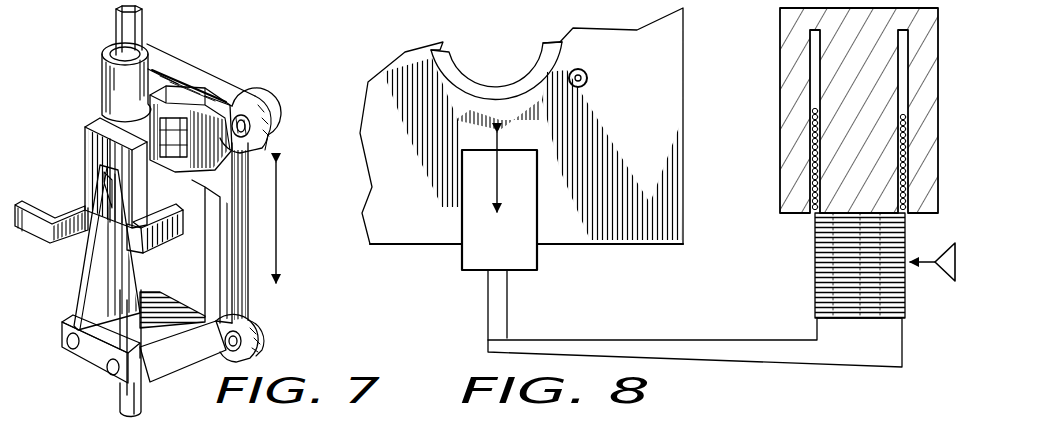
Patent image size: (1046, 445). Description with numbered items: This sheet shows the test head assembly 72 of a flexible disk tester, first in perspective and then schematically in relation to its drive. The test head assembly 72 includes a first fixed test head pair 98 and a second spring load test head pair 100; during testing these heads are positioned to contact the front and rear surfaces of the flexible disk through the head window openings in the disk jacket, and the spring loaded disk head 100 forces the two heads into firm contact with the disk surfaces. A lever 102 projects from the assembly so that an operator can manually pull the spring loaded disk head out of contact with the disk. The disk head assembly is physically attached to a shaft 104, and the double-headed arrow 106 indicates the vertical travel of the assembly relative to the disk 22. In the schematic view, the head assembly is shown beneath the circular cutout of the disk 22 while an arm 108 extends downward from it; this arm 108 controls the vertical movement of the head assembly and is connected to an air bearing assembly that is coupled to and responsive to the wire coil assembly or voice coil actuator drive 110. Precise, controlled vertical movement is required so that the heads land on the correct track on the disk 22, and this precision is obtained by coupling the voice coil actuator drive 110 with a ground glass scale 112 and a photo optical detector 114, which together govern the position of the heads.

In FIG. 8, the disk 22 is at (470, 108).
In FIG. 7, the test head assembly 72 is at (222, 58).
In FIG. 8, the test head assembly 72 is at (462, 223).
In FIG. 7, the first fixed test head pair 98 is at (225, 105).
In FIG. 7, the second spring load test head pair 100 is at (100, 116).
In FIG. 7, the lever 102 is at (58, 194).
In FIG. 7, the shaft 104 is at (143, 30).
In FIG. 7, the direction of motion 106 is at (262, 137).
In FIG. 8, the arm 108 is at (511, 336).
In FIG. 8, the voice coil actuator drive 110 is at (780, 153).
In FIG. 8, the ground glass scale 112 is at (815, 292).
In FIG. 8, the photo optical detector 114 is at (936, 262).